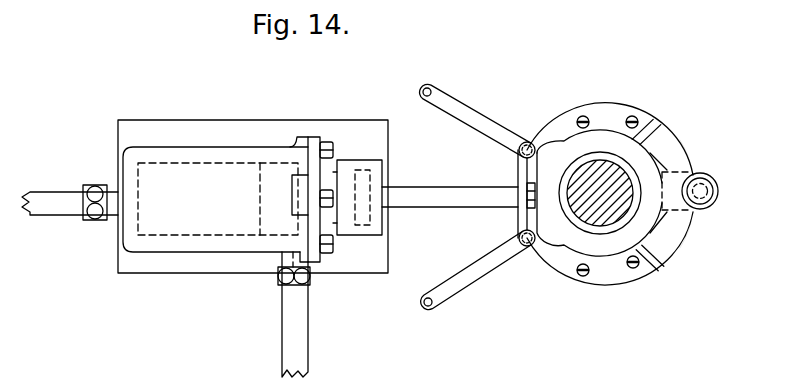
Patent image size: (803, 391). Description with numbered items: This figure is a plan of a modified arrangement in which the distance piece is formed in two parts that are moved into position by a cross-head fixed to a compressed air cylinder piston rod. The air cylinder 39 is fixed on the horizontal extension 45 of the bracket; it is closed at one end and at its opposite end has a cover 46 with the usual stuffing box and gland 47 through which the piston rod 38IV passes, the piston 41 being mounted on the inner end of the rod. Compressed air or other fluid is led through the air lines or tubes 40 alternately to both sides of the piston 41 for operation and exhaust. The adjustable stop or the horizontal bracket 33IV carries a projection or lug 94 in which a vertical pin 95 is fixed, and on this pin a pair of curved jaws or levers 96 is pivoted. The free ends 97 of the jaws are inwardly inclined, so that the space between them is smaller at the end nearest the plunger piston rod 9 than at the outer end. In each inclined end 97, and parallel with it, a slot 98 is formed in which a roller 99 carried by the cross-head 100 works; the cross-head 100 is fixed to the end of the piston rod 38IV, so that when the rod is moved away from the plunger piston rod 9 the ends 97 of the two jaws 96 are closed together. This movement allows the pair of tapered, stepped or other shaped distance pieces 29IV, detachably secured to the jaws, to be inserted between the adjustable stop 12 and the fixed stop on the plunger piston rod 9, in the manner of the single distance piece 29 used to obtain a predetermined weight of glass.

The plunger piston rod 9 is at (617, 217).
The adjustable stop 12 is at (573, 227).
The distance piece 29 is at (602, 278).
The distance pieces 29IV is at (605, 116).
The horizontal bracket 33IV is at (650, 142).
The piston rod 38IV is at (410, 188).
The air cylinder 39 is at (162, 148).
The air lines or tubes 40 is at (37, 191).
The piston 41 is at (258, 198).
The horizontal extension 45 is at (118, 275).
The cover 46 is at (316, 135).
The stuffing box and gland 47 is at (363, 240).
The projection or lug 94 is at (710, 186).
The vertical pin 95 is at (716, 202).
The curved jaws or levers 96 is at (680, 142).
The free ends 97 is at (480, 108).
The slot 98 is at (427, 88).
The roller 99 is at (530, 142).
The cross-head 100 is at (516, 173).